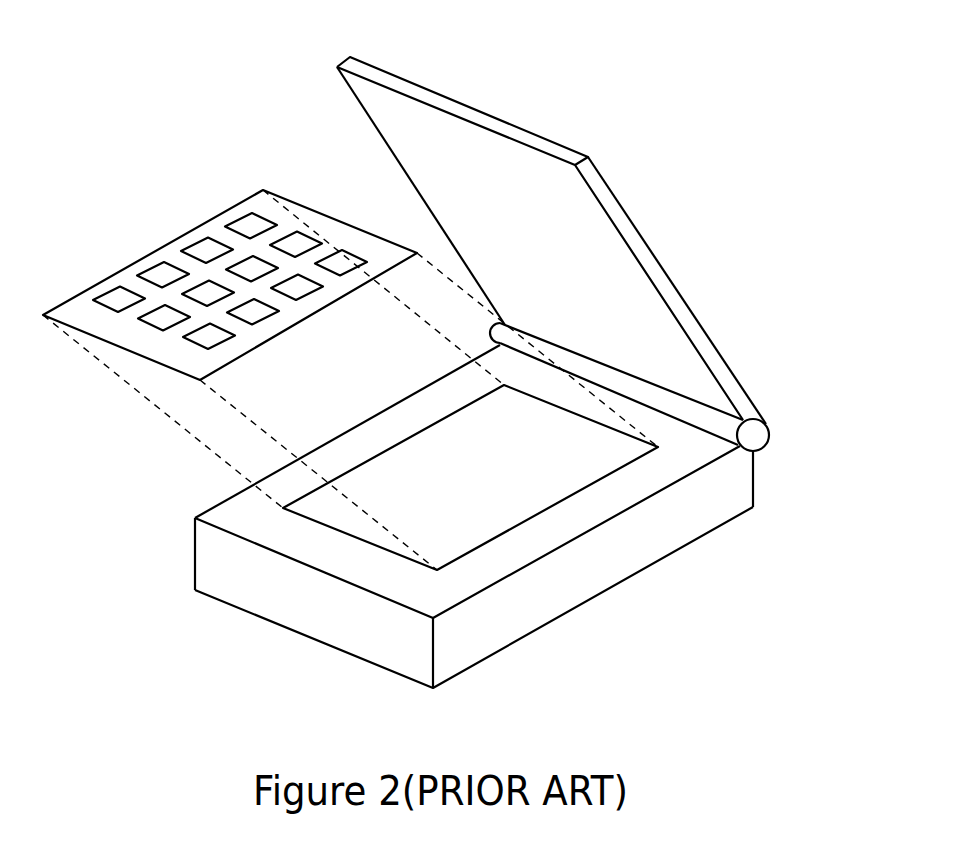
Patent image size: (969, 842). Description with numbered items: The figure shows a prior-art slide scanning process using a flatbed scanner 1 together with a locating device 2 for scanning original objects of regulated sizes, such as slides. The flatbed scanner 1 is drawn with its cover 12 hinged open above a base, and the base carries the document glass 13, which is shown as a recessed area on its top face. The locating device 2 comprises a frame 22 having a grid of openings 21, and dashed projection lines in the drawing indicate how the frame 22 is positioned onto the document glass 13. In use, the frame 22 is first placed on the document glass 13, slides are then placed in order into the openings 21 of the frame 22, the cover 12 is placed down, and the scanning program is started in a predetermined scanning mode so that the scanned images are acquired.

The notebook computer base 1 is at (755, 342).
The cover 12 is at (593, 263).
The document glass 13 is at (422, 545).
The locating device 2 is at (230, 263).
The key 21 is at (248, 222).
The frame 22 is at (77, 312).